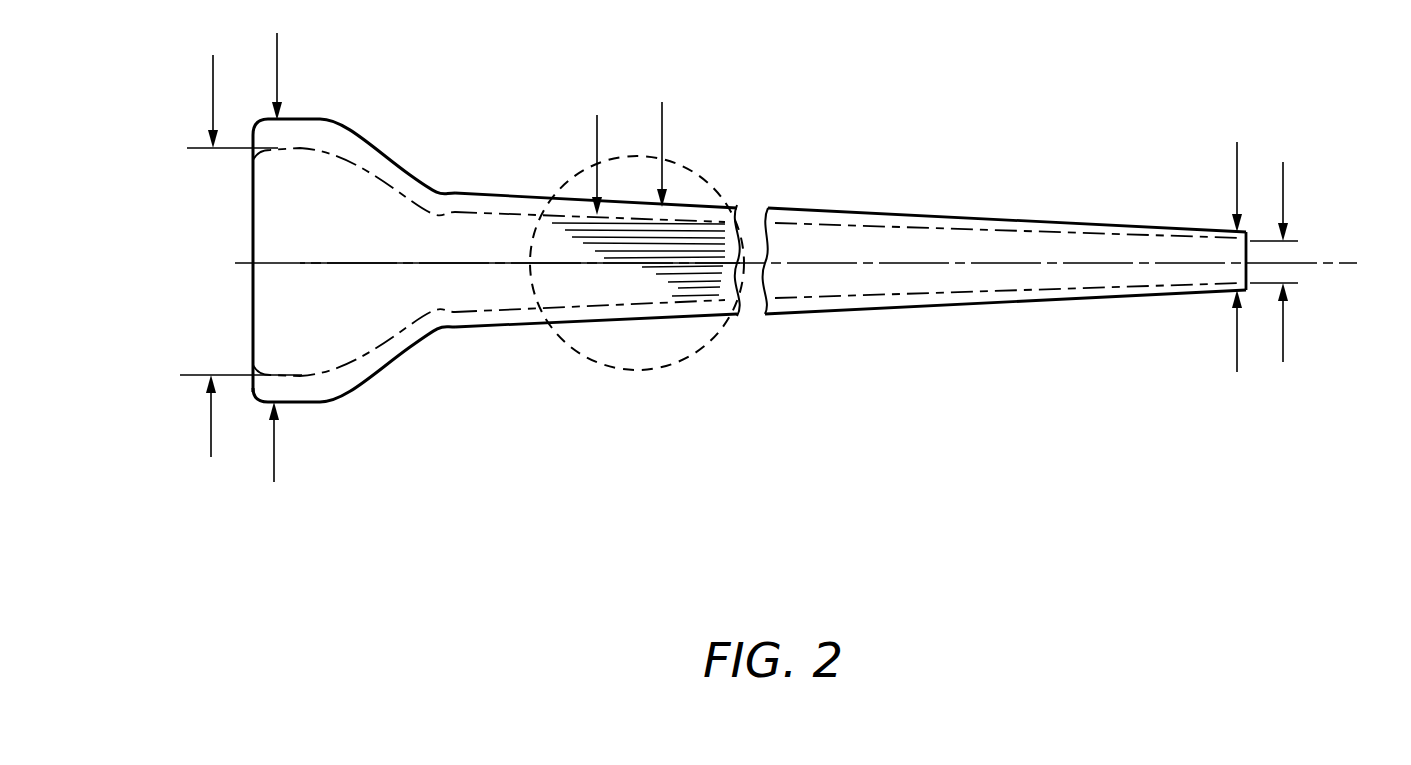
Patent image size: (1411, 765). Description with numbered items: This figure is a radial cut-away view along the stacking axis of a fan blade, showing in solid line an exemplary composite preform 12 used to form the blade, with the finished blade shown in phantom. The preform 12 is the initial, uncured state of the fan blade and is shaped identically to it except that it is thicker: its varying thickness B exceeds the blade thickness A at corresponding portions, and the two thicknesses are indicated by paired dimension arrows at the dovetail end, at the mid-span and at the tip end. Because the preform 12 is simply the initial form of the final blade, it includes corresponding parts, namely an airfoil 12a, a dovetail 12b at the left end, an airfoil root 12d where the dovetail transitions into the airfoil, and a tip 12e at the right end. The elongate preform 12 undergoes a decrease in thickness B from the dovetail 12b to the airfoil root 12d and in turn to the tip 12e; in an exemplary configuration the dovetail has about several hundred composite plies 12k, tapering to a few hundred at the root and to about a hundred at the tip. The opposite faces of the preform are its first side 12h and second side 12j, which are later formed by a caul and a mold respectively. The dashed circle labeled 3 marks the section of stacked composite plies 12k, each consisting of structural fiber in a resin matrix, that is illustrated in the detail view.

The preform 12 is at (898, 193).
The airfoil 12a is at (1003, 245).
The dovetail 12b is at (327, 120).
The root 12d is at (450, 193).
The tip 12e is at (1248, 270).
The first side 12h is at (825, 210).
The second side 12j is at (300, 263).
The composite plies 12k is at (712, 222).
The section of FIG. 3 is at (692, 163).
The blade thickness A is at (213, 86).
The preform thickness B is at (277, 67).